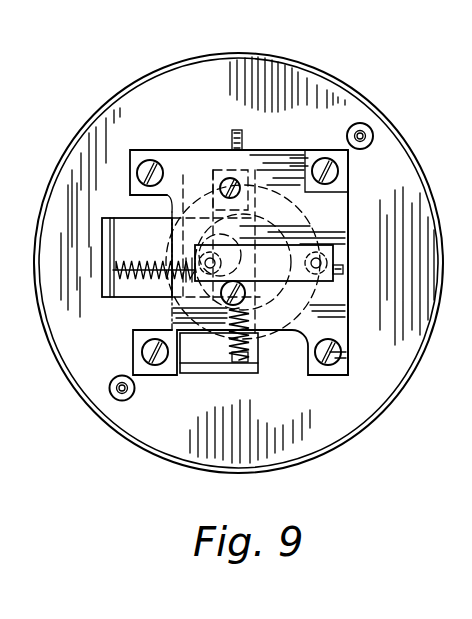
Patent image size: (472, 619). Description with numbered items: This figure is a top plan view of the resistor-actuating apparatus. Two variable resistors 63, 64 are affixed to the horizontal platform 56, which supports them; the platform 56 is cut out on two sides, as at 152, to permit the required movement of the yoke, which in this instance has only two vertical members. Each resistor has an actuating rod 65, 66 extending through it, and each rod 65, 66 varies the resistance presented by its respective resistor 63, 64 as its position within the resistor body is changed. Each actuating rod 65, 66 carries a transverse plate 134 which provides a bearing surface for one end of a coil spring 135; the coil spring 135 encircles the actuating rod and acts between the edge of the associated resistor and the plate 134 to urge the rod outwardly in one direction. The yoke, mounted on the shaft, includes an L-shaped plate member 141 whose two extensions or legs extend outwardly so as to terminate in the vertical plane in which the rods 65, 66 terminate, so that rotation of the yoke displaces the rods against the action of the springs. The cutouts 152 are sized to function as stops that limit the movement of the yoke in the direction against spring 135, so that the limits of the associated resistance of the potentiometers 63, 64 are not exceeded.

The cutout 152 is at (171, 150).
The plate member 141 is at (134, 220).
The transverse plate 134 is at (124, 298).
The coil spring 135 is at (131, 300).
The rod 65 is at (172, 300).
The rod 66 is at (233, 365).
The variable resistor 64 is at (346, 200).
The variable resistor 63 is at (300, 245).
The platform 56 is at (348, 201).